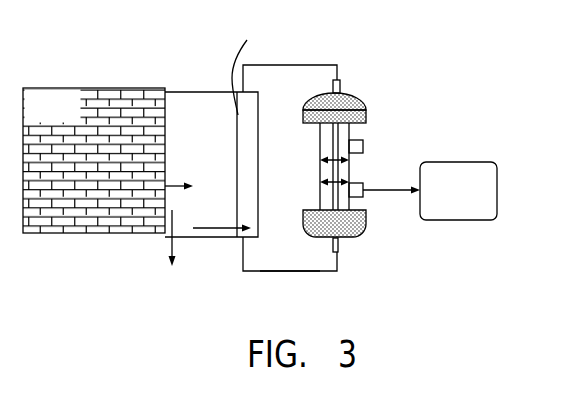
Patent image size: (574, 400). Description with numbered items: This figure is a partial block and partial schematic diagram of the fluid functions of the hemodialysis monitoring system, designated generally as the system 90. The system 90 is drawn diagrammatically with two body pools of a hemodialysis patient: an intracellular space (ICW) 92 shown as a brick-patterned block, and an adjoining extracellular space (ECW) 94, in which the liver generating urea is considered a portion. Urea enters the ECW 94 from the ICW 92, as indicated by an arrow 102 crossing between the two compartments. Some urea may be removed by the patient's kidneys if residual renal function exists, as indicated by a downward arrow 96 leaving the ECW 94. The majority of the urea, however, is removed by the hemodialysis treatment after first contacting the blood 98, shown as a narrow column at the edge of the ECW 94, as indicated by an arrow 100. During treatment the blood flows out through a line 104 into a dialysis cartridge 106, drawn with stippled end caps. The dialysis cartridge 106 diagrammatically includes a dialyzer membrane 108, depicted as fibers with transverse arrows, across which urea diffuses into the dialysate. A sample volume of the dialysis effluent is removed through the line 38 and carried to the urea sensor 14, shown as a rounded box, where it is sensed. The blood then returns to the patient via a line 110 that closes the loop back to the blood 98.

The intracellular space (ICW) 92 is at (55, 80).
The extracellular space (ECW) 94 is at (196, 85).
The blood 98 is at (258, 116).
The line 104 is at (313, 65).
The arrow 102 is at (167, 186).
The arrow 100 is at (216, 228).
The arrow 96 is at (178, 246).
The hemodialysis monitoring system operation 90 is at (387, 152).
The dialysis cartridge 106 is at (370, 100).
The dialyzer membrane 108 is at (340, 130).
The line 38 is at (386, 192).
The urea sensor 14 is at (506, 160).
The line 110 is at (283, 271).